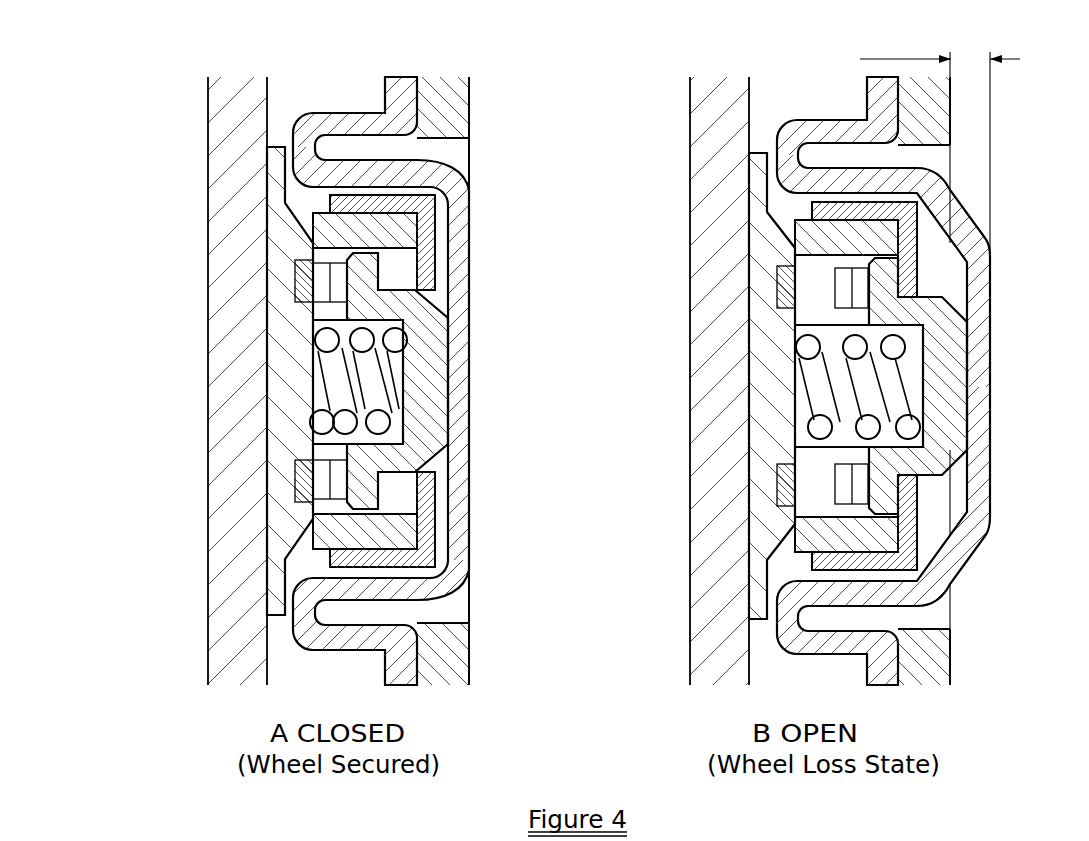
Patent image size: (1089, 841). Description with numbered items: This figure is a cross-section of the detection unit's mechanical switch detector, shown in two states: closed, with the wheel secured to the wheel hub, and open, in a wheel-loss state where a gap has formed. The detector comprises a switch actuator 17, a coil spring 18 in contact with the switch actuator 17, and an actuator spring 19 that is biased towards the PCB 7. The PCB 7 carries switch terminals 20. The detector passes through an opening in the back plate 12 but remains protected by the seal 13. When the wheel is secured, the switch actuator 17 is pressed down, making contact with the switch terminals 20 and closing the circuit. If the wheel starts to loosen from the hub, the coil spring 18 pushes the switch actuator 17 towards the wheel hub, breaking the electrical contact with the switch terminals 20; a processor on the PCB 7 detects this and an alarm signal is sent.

The PCB 7 is at (245, 210).
The back plate 12 is at (457, 104).
The seal 13 is at (457, 207).
The switch actuator 17 is at (440, 390).
The coil spring 18 is at (400, 421).
The actuator spring 19 is at (323, 479).
The switch terminals 20 is at (300, 264).